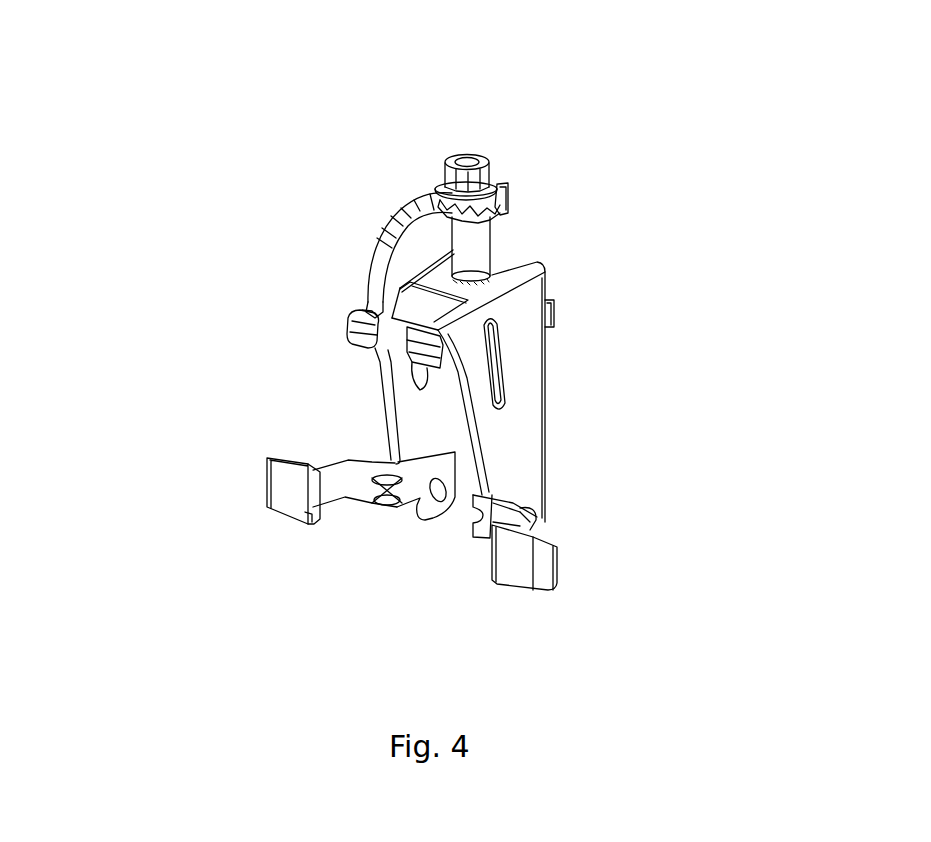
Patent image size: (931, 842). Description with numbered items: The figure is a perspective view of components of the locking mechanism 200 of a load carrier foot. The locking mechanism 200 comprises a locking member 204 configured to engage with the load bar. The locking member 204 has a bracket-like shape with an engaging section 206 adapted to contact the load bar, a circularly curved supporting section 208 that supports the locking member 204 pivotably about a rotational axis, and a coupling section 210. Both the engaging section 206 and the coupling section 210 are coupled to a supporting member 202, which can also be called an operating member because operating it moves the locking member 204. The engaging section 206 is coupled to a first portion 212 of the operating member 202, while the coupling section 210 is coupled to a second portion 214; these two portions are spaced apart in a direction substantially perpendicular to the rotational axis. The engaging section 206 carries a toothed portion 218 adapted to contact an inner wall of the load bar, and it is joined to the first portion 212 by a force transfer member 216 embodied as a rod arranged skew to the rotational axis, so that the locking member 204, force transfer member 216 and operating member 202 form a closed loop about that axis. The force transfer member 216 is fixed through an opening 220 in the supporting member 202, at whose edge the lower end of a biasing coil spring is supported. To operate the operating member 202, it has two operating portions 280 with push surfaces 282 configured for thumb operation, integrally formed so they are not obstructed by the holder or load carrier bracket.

The locking mechanism 200 is at (557, 112).
The supporting member 202 is at (557, 447).
The locking member 204 is at (308, 189).
The engaging section 206 is at (498, 165).
The circularly curved supporting section 208 is at (373, 235).
The coupling section 210 is at (370, 355).
The first portion 212 is at (565, 277).
The second portion 214 is at (343, 328).
The force transfer member 216 is at (480, 247).
The toothed portion 218 is at (515, 195).
The opening 220 is at (497, 268).
The operating portions 280 is at (439, 562).
The push surfaces 282 is at (287, 495).